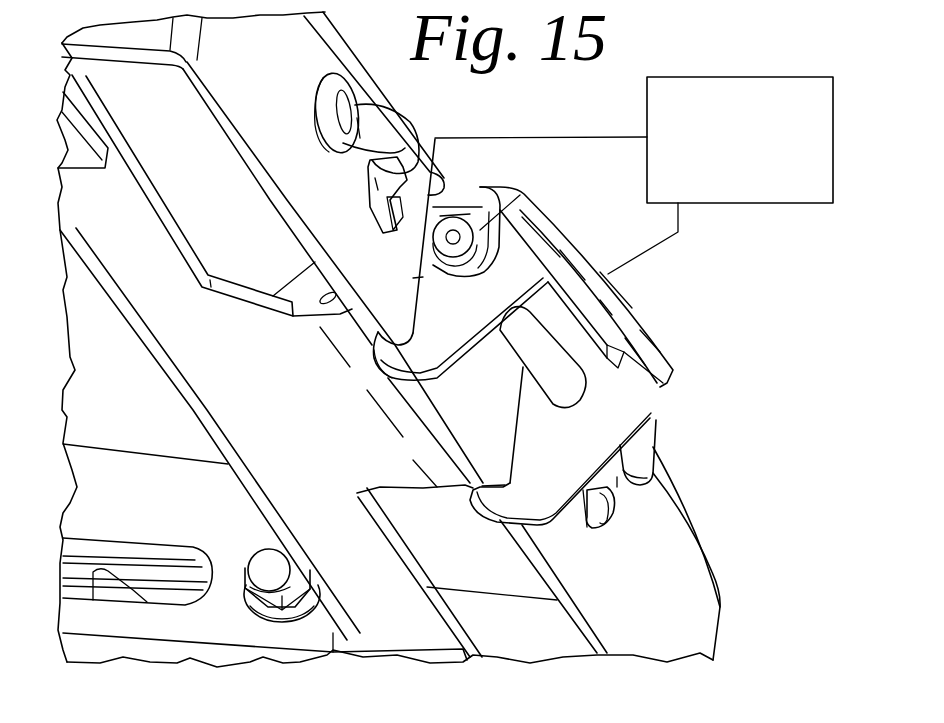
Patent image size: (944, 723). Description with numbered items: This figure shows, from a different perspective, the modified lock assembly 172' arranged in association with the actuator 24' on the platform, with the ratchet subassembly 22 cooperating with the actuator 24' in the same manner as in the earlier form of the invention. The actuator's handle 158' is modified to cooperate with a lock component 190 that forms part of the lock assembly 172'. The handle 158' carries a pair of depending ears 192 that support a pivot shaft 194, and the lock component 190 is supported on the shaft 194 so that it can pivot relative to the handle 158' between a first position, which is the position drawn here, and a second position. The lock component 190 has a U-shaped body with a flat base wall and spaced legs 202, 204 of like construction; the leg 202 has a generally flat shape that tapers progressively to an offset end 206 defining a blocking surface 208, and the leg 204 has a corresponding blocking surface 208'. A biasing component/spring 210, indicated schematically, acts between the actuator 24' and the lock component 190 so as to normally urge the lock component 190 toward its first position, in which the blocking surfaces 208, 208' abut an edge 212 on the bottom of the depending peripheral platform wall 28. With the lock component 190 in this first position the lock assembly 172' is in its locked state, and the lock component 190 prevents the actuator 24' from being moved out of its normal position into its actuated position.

The ratchet subassembly 22 is at (125, 525).
The actuator 24' is at (677, 305).
The depending peripheral wall 28 is at (665, 598).
The handle 158' is at (674, 299).
The lock assembly 172' is at (681, 453).
The lock component 190 is at (583, 245).
The depending ears 192 is at (490, 213).
The pivot shaft 194 is at (537, 352).
The leg 202 is at (430, 350).
The leg 204 is at (575, 450).
The offset end 206 is at (380, 358).
The blocking surface 208 is at (389, 311).
The blocking surface 208' is at (488, 454).
The biasing component/spring 210 is at (760, 197).
The edge 212 is at (263, 170).